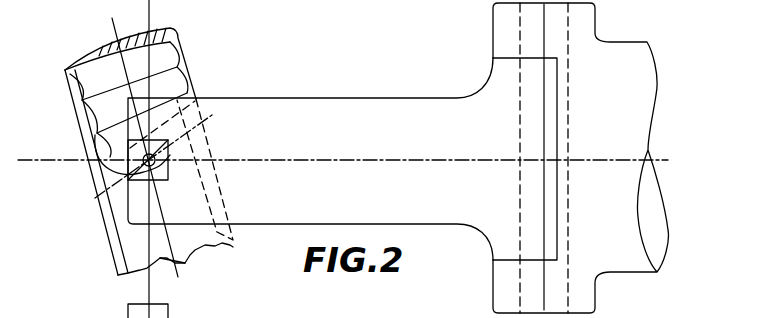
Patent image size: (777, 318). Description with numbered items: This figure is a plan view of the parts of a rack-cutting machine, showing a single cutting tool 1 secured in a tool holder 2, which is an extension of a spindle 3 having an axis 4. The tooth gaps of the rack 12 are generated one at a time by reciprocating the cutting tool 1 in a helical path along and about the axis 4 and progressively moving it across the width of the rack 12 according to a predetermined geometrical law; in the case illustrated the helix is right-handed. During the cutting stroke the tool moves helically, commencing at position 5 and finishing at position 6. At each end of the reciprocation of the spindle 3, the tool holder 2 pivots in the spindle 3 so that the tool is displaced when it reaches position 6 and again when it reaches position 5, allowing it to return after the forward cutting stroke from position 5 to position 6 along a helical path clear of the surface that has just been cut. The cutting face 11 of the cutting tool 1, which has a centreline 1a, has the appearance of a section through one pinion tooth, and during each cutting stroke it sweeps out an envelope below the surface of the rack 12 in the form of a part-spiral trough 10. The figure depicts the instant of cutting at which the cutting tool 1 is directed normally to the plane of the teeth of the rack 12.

The cutting tool 1 is at (197, 316).
The centreline 1a is at (97, 164).
The tool holder 2 is at (233, 228).
The spindle 3 is at (587, 17).
The axis 4 is at (371, 160).
The commencing position 5 is at (213, 115).
The finishing position 6 is at (83, 212).
The trough 10 is at (145, 165).
The cutting face 11 is at (128, 158).
The rack 12 is at (194, 256).